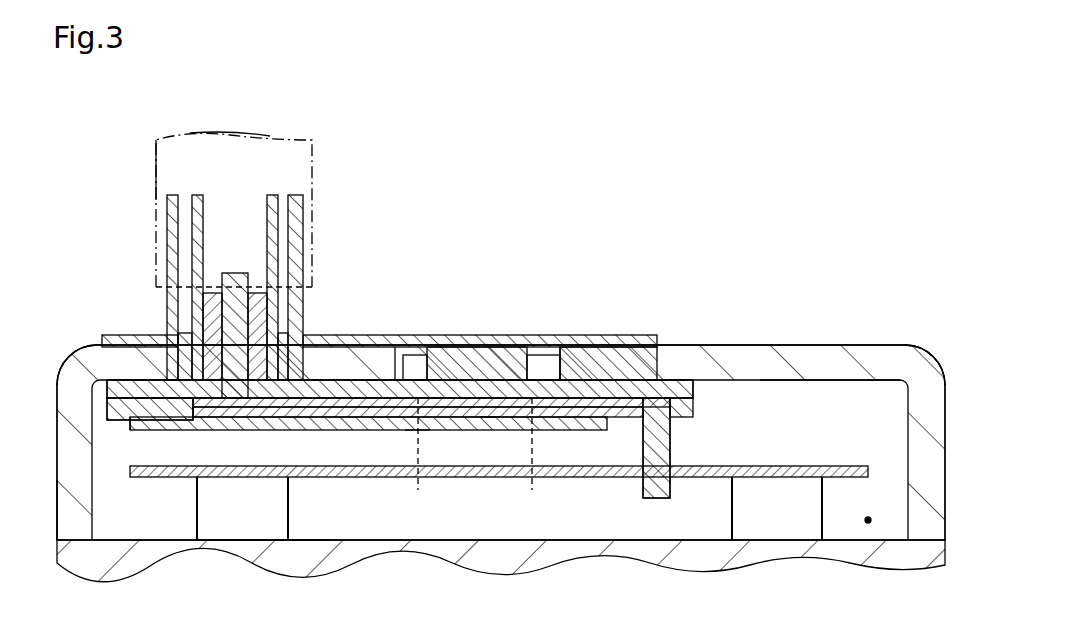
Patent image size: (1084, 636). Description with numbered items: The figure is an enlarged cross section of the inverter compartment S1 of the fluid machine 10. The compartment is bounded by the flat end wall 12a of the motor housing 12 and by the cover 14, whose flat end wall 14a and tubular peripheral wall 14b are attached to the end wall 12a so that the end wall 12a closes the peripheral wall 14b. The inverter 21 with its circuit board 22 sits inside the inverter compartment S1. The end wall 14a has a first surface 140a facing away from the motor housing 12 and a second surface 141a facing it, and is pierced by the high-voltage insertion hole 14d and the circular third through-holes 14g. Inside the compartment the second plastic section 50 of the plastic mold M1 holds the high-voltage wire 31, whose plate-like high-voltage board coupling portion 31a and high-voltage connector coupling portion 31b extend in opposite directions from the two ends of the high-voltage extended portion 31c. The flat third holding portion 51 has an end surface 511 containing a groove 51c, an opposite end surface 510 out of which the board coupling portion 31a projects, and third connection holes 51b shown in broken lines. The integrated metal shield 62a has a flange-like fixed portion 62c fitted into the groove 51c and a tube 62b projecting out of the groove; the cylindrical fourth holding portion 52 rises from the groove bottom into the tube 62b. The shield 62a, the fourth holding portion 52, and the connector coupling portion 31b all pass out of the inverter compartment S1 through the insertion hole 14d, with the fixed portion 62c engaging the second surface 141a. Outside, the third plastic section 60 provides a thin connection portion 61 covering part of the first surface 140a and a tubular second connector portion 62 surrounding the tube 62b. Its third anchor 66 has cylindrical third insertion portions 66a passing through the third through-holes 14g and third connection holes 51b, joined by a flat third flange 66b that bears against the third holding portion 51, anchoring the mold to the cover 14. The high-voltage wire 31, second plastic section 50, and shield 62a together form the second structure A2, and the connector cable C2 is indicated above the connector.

The fluid machine 10 is at (830, 165).
The motor housing 12 is at (400, 545).
The end wall 12a is at (307, 545).
The cover 14 is at (748, 345).
The end wall 14a is at (85, 345).
The peripheral wall 14b is at (82, 528).
The high-voltage insertion hole 14d is at (272, 370).
The third through-holes 14g is at (403, 357).
The inverter 21 is at (866, 460).
The circuit board 22 is at (409, 487).
The high-voltage wire 31 is at (655, 498).
The high-voltage board coupling portion 31a is at (668, 448).
The high-voltage connector coupling portion 31b is at (243, 325).
The high-voltage extended portion 31c is at (628, 398).
The second plastic section 50 is at (690, 383).
The third holding portion 51 is at (695, 389).
The third connection holes 51b is at (481, 456).
The groove 51c is at (185, 380).
The other end surface 510 is at (622, 420).
The end surface 511 is at (668, 380).
The fourth holding portion 52 is at (210, 318).
The third plastic section 60 is at (478, 345).
The connection portion 61 is at (608, 345).
The second connector portion 62 is at (297, 228).
The shield 62a is at (195, 222).
The tube 62b is at (273, 198).
The fixed portion 62c is at (170, 432).
The third anchor 66 is at (353, 430).
The third insertion portions 66a is at (413, 357).
The third flange 66b is at (490, 430).
The first surface 140a is at (862, 345).
The second surface 141a is at (825, 380).
The inverter compartment S1 is at (868, 523).
The plastic mold M1 is at (139, 112).
The connector cable C2 is at (247, 140).
The second structure A2 is at (137, 172).